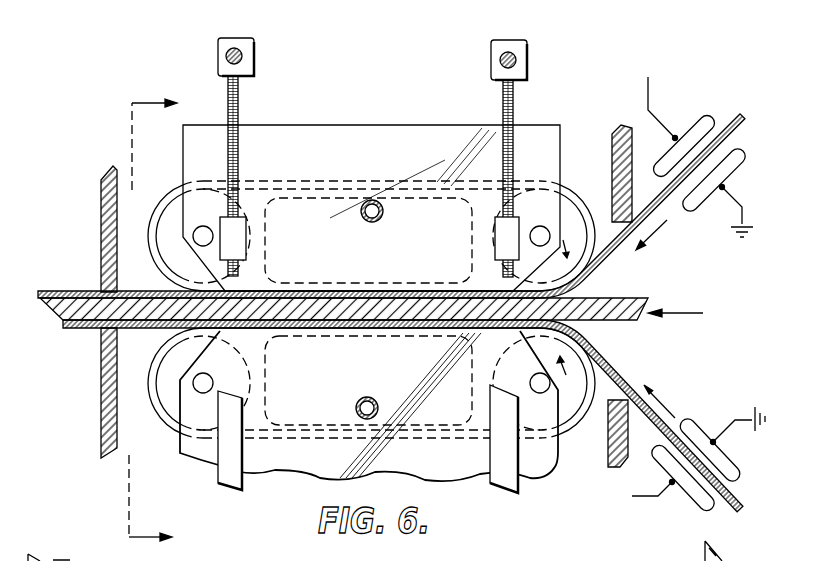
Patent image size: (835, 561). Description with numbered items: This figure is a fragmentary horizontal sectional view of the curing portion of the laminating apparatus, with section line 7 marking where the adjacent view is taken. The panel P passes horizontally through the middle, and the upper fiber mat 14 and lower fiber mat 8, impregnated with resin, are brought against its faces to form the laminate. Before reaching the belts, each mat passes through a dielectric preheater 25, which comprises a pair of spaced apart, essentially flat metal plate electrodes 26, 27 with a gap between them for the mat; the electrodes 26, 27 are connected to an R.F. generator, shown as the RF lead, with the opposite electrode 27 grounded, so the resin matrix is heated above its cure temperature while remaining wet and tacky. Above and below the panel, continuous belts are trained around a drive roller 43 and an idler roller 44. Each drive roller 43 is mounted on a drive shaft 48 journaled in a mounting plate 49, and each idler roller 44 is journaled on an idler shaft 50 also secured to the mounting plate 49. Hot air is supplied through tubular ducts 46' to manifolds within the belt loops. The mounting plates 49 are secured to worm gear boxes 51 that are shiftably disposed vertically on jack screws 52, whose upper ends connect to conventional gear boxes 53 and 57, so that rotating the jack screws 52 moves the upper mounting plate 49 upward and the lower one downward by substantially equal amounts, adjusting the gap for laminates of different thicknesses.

The section line 7- 7 is at (164, 320).
The fiber mat 8 is at (611, 369).
The fiber mat 14 is at (605, 261).
The dielectric preheater 25 is at (708, 219).
The electrode 26 is at (688, 124).
The electrode 27 is at (733, 174).
The drive roller 43 is at (173, 257).
The idler roller 44 is at (562, 202).
The tubular duct 46' is at (356, 309).
The drive shaft 48 is at (196, 229).
The mounting plate 49 is at (346, 112).
The idler shaft 50 is at (548, 229).
The worm gear box 51 is at (247, 240).
The jack screw 52 is at (239, 143).
The gear box 53 is at (256, 51).
The adjusting nut 57 is at (528, 54).
The panel P is at (641, 298).
The RF source RF is at (637, 281).